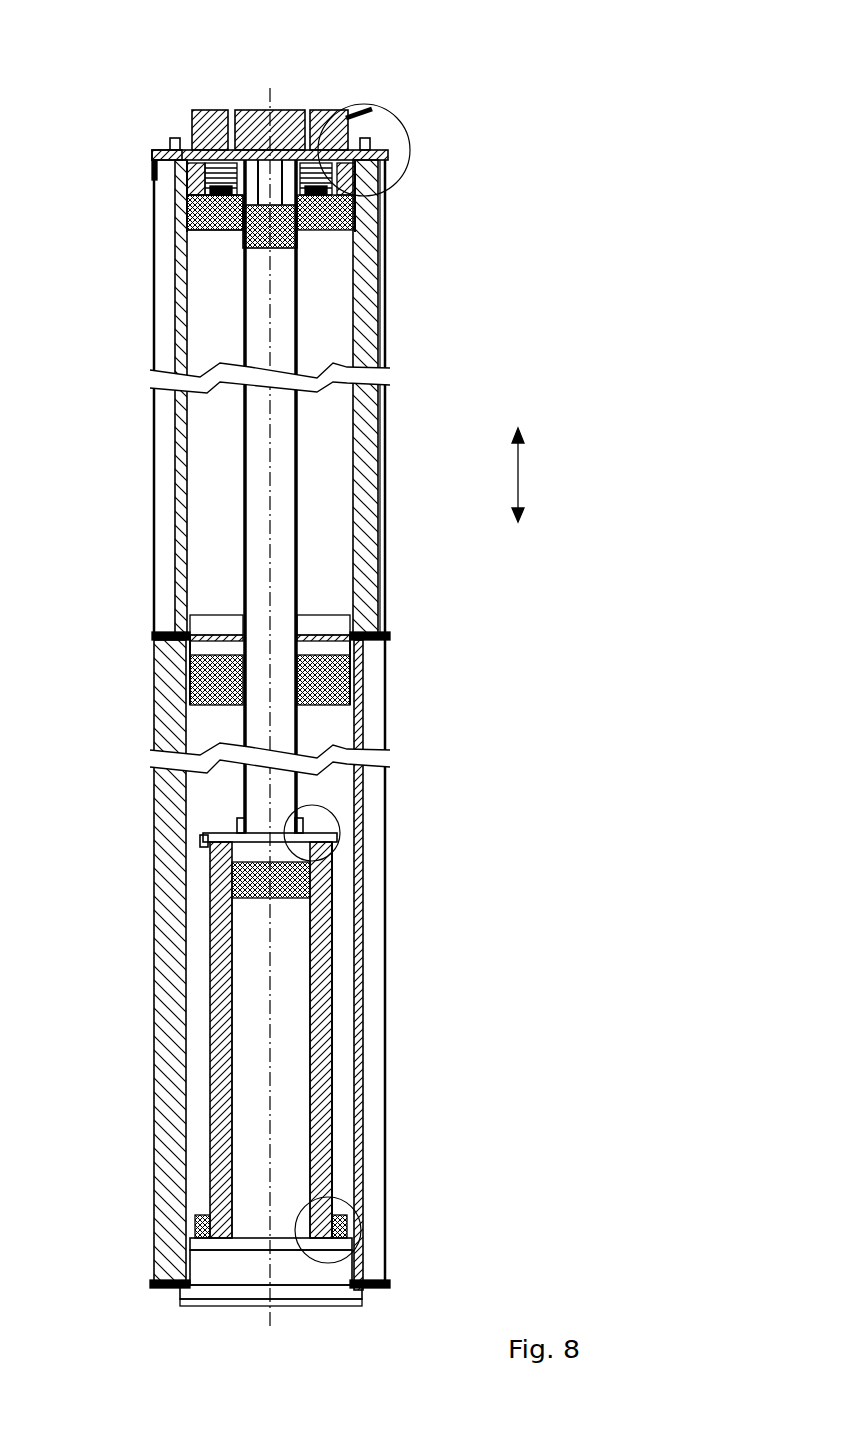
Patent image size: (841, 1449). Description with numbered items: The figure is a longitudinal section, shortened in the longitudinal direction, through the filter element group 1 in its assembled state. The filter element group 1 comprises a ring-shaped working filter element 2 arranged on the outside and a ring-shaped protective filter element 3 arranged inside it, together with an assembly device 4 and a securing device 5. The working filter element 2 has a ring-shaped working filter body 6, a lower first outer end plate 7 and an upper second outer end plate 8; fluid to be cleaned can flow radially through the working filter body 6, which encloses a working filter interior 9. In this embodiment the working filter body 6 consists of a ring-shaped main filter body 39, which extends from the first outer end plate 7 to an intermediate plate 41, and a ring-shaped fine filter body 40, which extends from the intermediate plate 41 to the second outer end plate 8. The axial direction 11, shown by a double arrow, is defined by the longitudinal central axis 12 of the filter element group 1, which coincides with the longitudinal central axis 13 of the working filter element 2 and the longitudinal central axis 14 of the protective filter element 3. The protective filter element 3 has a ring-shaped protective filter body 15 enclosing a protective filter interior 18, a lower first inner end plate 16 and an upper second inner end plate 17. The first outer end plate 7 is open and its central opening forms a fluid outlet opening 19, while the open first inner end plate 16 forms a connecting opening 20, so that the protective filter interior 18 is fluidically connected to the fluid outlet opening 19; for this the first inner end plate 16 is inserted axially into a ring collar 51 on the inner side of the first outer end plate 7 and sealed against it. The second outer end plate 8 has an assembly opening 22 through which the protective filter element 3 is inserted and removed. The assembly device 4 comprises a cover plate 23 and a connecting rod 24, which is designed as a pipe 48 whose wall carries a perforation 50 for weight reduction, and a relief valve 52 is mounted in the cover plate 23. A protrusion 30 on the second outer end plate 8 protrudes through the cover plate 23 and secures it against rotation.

The filter element group 1 is at (494, 124).
The working filter element 2 is at (392, 582).
The protective filter element 3 is at (336, 1000).
The assembly device 4 is at (304, 298).
The securing device 5 is at (378, 127).
The working filter body 6 is at (269, 725).
The first outer end plate 7 is at (180, 1298).
The second outer end plate 8 is at (151, 173).
The working filter interior 9 is at (218, 475).
The axial direction 11 is at (522, 472).
The longitudinal central axis of the filter element group 12 is at (272, 666).
The longitudinal central axis of the working filter element 13 is at (272, 666).
The longitudinal central axis of the protective filter element 14 is at (262, 95).
The protective filter body 15 is at (336, 1066).
The first inner end plate 16 is at (194, 1236).
The second inner end plate 17 is at (198, 840).
The protective filter interior 18 is at (265, 1000).
The fluid outlet opening 19 is at (337, 1288).
The connecting opening 20 is at (250, 1250).
The assembly opening 22 is at (210, 230).
The cover plate 23 is at (156, 148).
The connecting rod 24 is at (379, 496).
The protrusion 30 is at (174, 138).
The main filter body 39 is at (185, 893).
The fine filter body 40 is at (368, 470).
The intermediate plate 41 is at (150, 632).
The pipe 48 is at (300, 346).
The perforation 50 is at (298, 240).
The ring collar 51 is at (200, 1228).
The relief valve 52 is at (212, 152).